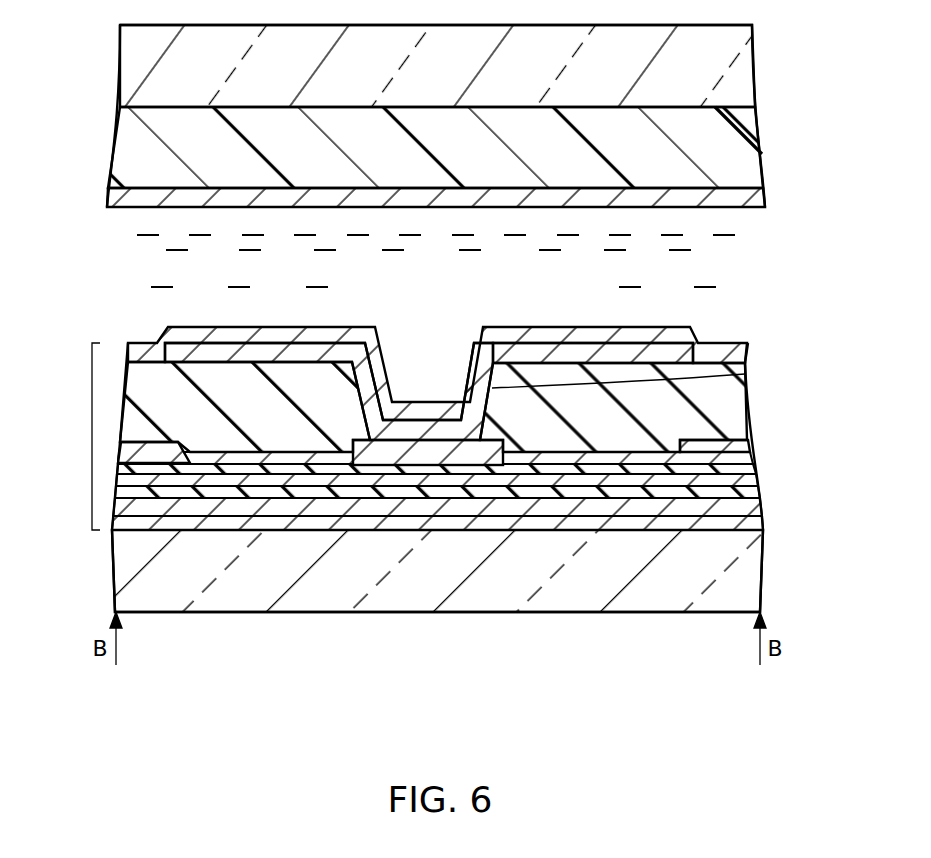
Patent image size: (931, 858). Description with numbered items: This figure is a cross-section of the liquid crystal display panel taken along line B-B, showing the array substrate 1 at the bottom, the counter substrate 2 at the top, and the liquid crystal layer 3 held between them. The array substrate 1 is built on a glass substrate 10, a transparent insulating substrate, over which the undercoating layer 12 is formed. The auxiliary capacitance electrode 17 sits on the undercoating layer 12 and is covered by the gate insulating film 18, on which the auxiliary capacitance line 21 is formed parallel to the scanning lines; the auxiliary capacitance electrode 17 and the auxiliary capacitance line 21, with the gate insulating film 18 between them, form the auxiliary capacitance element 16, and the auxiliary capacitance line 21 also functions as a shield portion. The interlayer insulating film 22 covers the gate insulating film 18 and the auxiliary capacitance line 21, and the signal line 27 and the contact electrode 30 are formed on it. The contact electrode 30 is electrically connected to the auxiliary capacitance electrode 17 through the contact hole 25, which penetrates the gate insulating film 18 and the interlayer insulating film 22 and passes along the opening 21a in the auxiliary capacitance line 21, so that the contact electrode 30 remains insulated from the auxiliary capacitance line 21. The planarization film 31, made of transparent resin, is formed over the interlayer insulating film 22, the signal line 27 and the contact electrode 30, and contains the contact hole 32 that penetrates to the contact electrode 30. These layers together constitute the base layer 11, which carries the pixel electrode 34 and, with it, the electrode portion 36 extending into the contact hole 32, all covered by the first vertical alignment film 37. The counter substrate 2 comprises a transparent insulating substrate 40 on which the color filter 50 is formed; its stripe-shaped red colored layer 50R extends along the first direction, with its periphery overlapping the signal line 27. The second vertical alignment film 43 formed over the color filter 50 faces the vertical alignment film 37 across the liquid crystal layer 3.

The array substrate 1 is at (78, 591).
The counter substrate 2 is at (799, 96).
The liquid crystal layer 3 is at (742, 275).
The glass substrate 10 is at (752, 595).
The base layer 11 is at (75, 436).
The undercoating layer 12 is at (758, 526).
The auxiliary capacitance element 16 is at (183, 666).
The auxiliary capacitance electrode 17 is at (258, 512).
The gate insulating film 18 is at (755, 505).
The auxiliary capacitance line 21 is at (215, 484).
The opening 21a is at (396, 484).
The interlayer insulating film 22 is at (752, 471).
The contact hole 25 is at (433, 484).
The signal line 27 is at (755, 447).
The contact electrode 30 is at (357, 484).
The planarization film 31 is at (746, 402).
The contact hole 32 is at (745, 374).
The pixel electrode 34 is at (665, 352).
The pixel electrode 36 is at (262, 327).
The vertical alignment film 37 is at (748, 344).
The transparent insulating substrate 40 is at (737, 48).
The vertical alignment film 43 is at (752, 199).
The color filter 50 is at (774, 132).
The red colored layer 50R is at (748, 164).